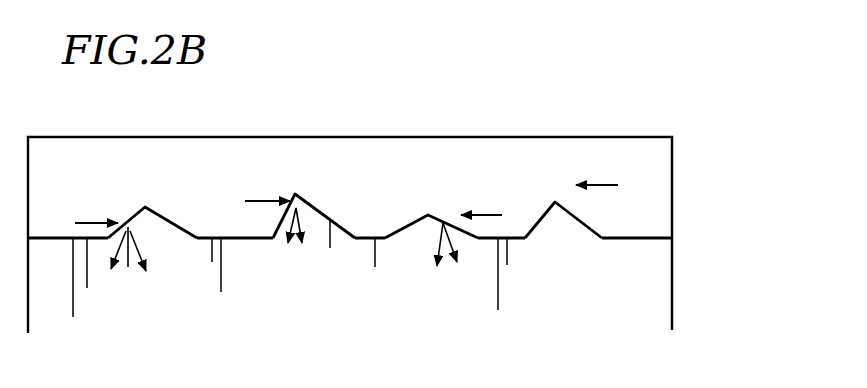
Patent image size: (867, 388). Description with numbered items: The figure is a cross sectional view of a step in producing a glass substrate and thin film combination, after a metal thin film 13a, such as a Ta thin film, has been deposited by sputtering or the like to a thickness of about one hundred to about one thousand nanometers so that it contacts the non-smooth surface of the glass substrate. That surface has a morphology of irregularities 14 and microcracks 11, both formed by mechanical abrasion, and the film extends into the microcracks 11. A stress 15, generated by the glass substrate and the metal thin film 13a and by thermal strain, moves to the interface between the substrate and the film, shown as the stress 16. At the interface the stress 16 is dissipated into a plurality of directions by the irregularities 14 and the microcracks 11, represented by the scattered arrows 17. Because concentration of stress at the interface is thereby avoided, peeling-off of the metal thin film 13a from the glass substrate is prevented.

The microcracks 11 is at (500, 278).
The metal thin film 13a is at (390, 172).
The irregularities 14 is at (296, 189).
The stress 15 is at (614, 185).
The stress moved to the interface 16 is at (260, 200).
The dissipated stress 17 is at (297, 222).